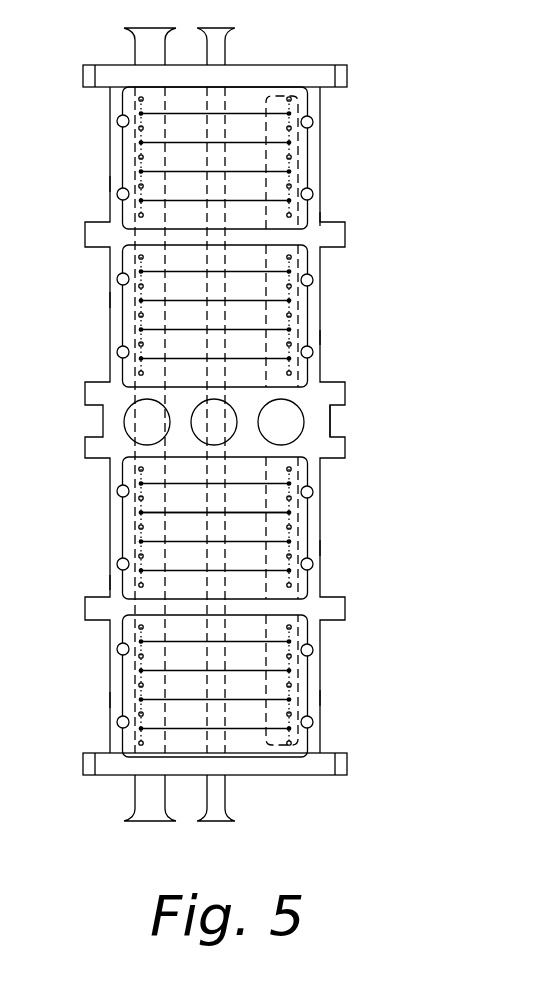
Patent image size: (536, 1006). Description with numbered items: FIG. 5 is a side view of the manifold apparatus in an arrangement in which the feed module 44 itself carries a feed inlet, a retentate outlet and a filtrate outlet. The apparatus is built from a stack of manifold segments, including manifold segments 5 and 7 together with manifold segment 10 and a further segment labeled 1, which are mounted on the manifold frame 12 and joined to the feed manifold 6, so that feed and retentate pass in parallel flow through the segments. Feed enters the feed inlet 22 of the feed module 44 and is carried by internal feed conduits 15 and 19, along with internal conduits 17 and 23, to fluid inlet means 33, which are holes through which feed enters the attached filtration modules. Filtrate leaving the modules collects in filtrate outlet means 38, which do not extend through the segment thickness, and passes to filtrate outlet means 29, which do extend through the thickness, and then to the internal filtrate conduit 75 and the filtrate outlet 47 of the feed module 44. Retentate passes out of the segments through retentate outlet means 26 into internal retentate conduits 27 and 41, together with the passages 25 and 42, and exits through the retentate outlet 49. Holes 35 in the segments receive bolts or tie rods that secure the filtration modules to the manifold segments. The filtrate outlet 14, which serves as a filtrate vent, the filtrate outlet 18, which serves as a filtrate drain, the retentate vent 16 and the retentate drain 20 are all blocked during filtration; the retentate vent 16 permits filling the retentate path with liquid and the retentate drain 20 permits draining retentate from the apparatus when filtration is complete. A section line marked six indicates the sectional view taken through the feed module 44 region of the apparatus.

The first filter module 1 is at (323, 157).
The manifold segment 5 is at (323, 360).
The feed manifold 6 is at (323, 660).
The manifold segment 7 is at (325, 568).
The manifold segment 10 is at (320, 66).
The manifold frame 12 is at (330, 776).
The filtrate outlet 14 is at (225, 50).
The internal feed conduit 15 is at (323, 548).
The retentate vent 16 is at (135, 55).
The internal conduit 17 is at (323, 698).
The filtrate outlet 18 is at (227, 795).
The internal feed conduit 19 is at (323, 337).
The retentate drain 20 is at (137, 795).
The feed inlet 22 is at (266, 434).
The internal conduit 23 is at (325, 219).
The retentate outlet / internal conduit 25 is at (113, 181).
The retentate outlet means 26 is at (138, 128).
The internal retentate conduit 27 is at (130, 586).
The filtrate outlet means 29 is at (213, 172).
The fluid inlet means 33 is at (292, 188).
The holes 35 is at (312, 120).
The filtrate outlet means 38 is at (143, 142).
The internal retentate conduit 41 is at (112, 301).
The internal conduit 42 is at (130, 700).
The feed module 44 is at (323, 432).
The filtrate outlet 47 is at (199, 434).
The retentate outlet 49 is at (132, 434).
The internal filtrate conduit 75 is at (206, 512).